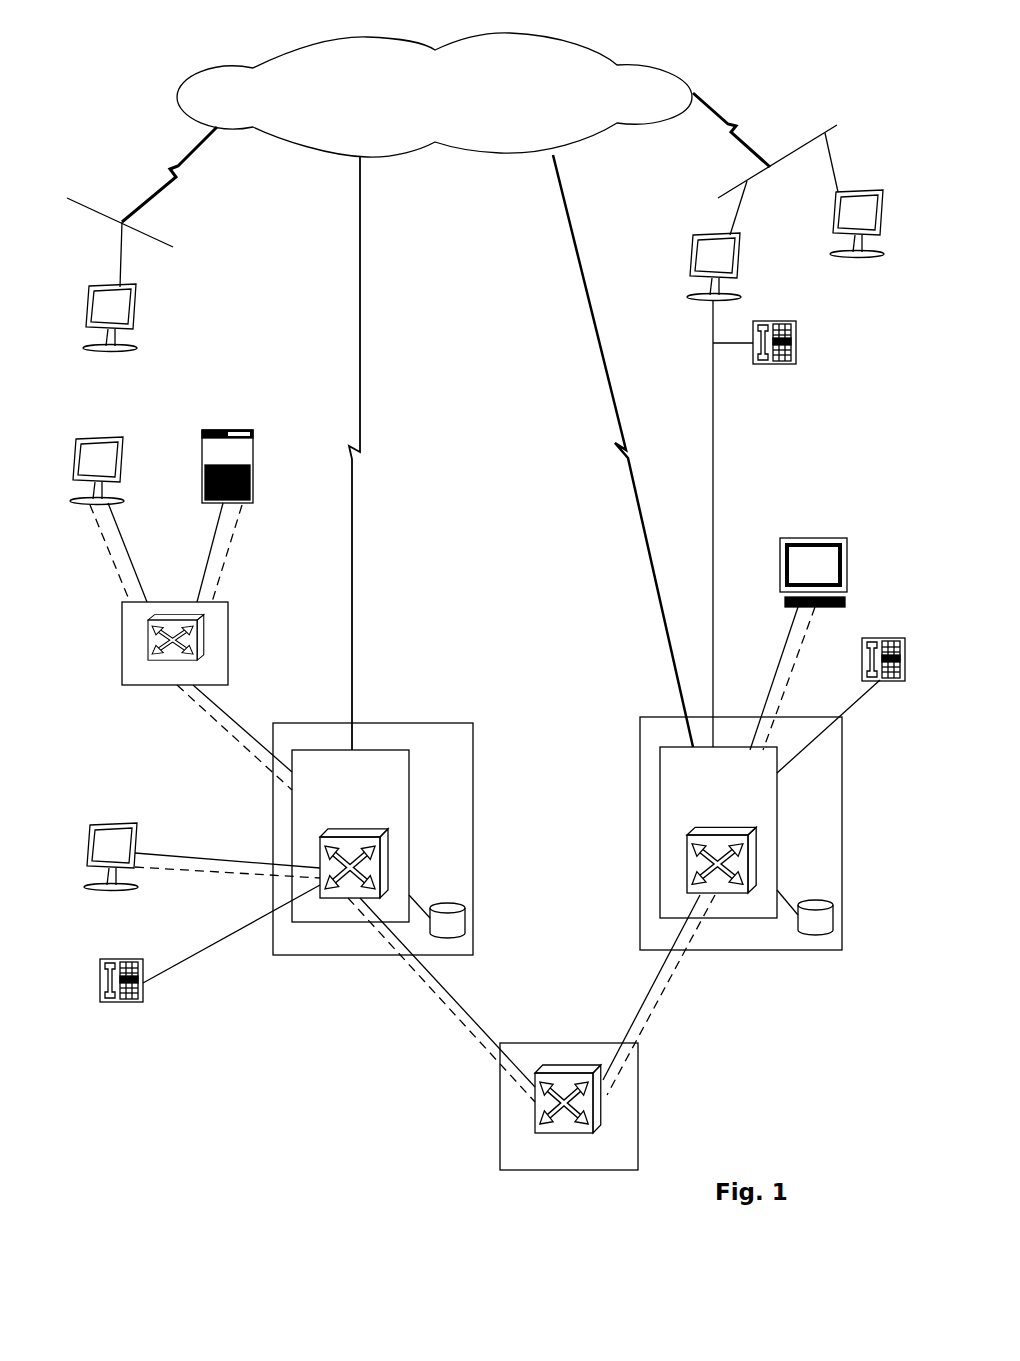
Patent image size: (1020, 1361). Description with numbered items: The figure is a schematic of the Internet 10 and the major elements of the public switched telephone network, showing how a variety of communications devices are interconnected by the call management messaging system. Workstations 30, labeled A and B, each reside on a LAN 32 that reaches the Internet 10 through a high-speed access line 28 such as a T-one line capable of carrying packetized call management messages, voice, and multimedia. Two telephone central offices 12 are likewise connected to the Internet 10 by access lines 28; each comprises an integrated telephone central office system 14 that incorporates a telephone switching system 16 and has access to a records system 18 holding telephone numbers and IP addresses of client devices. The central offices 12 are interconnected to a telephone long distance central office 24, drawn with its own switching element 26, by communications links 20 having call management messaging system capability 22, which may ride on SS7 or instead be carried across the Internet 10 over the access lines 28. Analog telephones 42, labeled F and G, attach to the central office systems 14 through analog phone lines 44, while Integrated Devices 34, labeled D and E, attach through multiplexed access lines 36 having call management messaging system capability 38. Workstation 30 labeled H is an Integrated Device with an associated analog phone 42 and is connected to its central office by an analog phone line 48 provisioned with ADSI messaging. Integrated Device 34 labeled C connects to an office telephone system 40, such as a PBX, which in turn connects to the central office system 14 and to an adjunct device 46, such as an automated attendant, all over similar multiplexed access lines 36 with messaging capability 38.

The Internet 10 is at (313, 42).
The telephone central office 12 is at (473, 845).
The integrated telephone central office system 14 is at (409, 832).
The telephone switching system 16 is at (387, 880).
The records system 18 is at (465, 930).
The communications link 20 is at (447, 991).
The call management messaging system capability 22 is at (428, 985).
The telephone long distance central office 24 is at (638, 1128).
The hub switch 26 is at (568, 1133).
The high-speed access line 28 is at (177, 175).
The workstation 30 is at (85, 312).
The LAN 32 is at (92, 210).
The Integrated Device 34 is at (110, 437).
The multiplexed access line 36 is at (203, 568).
The call management messaging system capability 38 is at (125, 585).
The office telephone system 40 is at (228, 618).
The analog telephone 42 is at (767, 364).
The analog phone line 44 is at (853, 706).
The adjunct device 46 is at (253, 458).
The analog phone line 48 is at (717, 460).